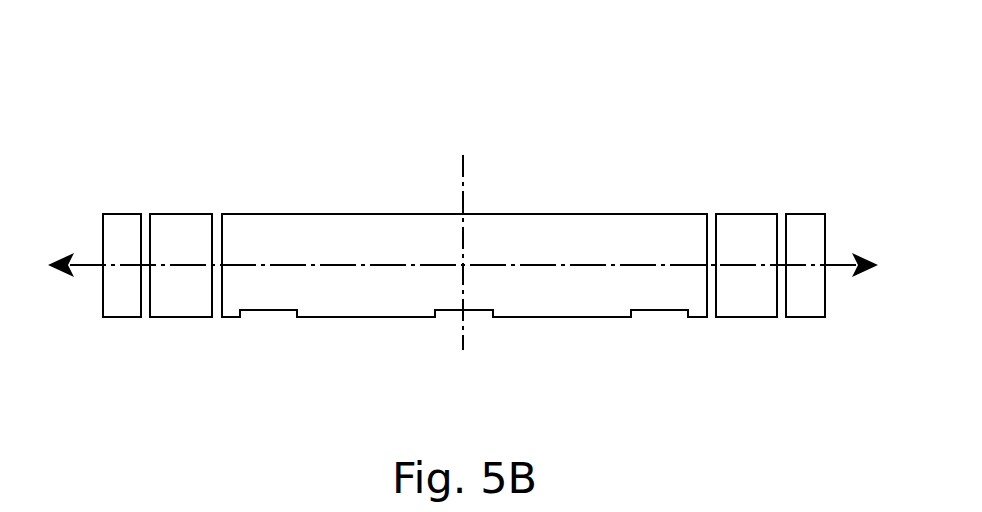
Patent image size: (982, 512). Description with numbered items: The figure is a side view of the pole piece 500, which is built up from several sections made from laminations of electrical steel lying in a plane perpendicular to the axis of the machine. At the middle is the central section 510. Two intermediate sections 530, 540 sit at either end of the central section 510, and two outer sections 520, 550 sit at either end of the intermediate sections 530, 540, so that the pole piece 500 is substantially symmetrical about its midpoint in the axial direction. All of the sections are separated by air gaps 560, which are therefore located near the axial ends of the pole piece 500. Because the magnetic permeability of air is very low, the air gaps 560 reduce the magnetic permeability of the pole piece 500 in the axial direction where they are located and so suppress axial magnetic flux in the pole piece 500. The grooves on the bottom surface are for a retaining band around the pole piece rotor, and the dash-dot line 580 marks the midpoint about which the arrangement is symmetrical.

The pole piece 500 is at (638, 112).
The central section 510 is at (553, 317).
The outer section 520 is at (123, 317).
The intermediate section 530 is at (183, 317).
The intermediate section 540 is at (750, 317).
The outer section 550 is at (808, 317).
The air gaps 560 is at (215, 214).
The transverse center axis 580 is at (463, 185).